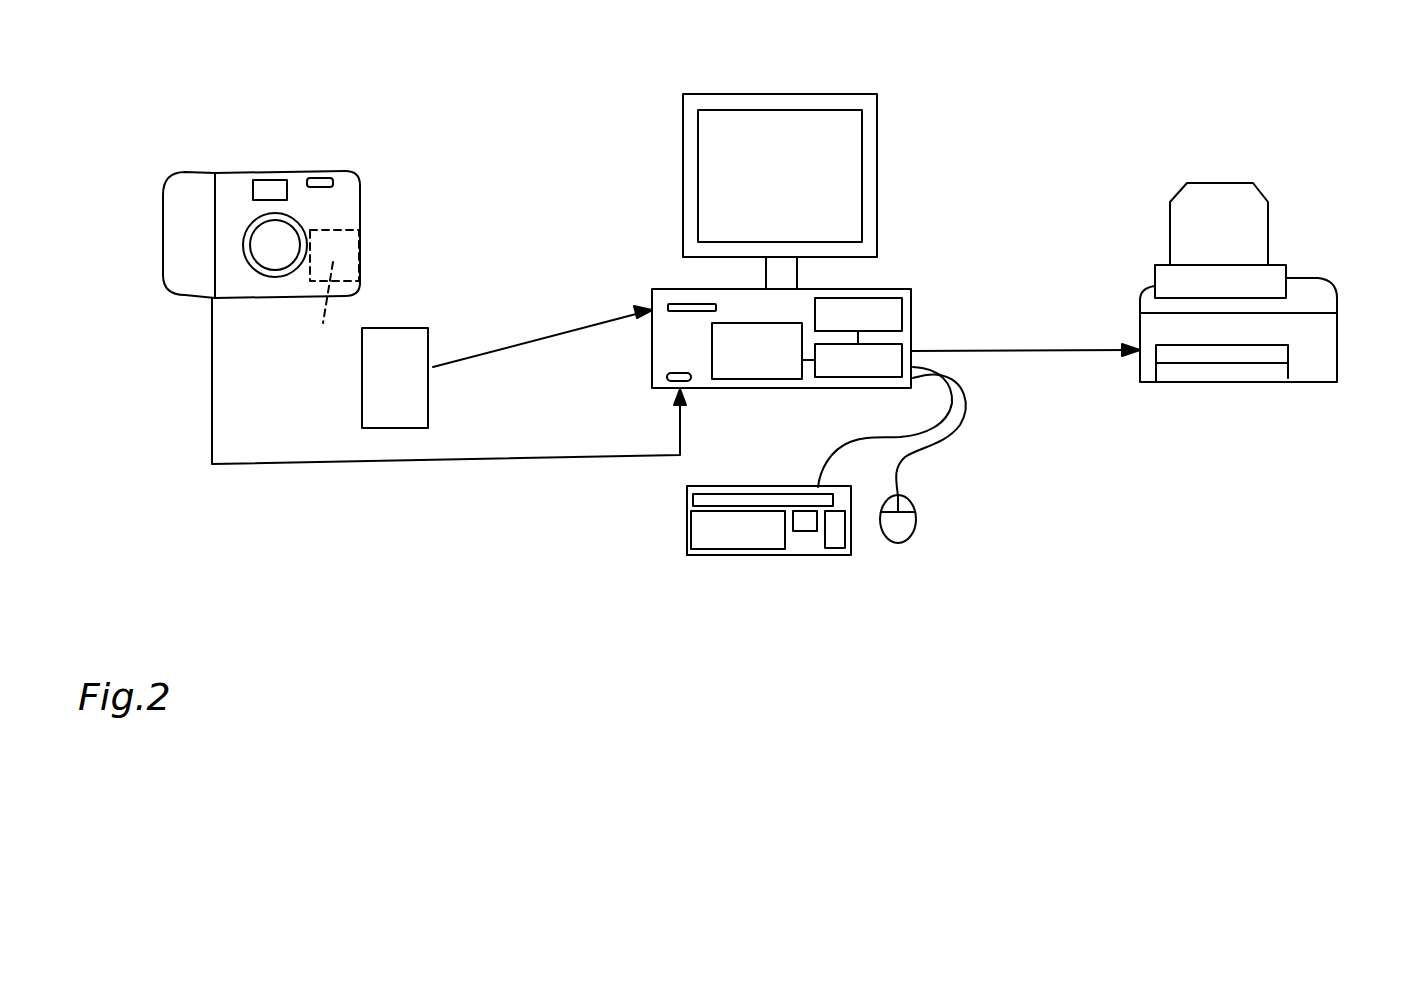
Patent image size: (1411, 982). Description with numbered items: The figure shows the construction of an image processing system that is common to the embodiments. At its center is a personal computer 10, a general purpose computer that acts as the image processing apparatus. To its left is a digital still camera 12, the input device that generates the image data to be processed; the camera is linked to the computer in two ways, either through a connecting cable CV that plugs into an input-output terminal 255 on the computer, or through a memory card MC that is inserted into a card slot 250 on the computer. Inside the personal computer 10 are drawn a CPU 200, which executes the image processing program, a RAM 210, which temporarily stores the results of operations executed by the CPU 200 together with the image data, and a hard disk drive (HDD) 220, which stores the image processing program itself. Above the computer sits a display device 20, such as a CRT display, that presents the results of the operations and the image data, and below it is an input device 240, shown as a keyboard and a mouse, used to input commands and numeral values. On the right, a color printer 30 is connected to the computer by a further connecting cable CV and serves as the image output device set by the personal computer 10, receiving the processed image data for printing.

The digital still camera 12 is at (243, 172).
The memory card MC is at (378, 388).
The connecting cable CV is at (580, 448).
The display device 20 is at (877, 154).
The personal computer 10 is at (922, 248).
The card slot 250 is at (693, 305).
The input-output terminal 255 is at (680, 373).
The hard disk drive (HDD) 220 is at (767, 371).
The RAM 210 is at (896, 312).
The CPU 200 is at (833, 368).
The input device 240 is at (858, 576).
The color printer 30 is at (1303, 278).